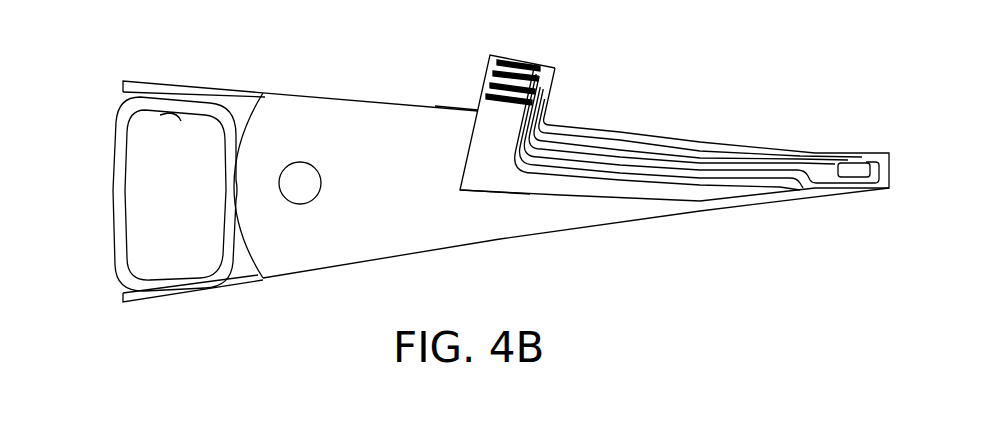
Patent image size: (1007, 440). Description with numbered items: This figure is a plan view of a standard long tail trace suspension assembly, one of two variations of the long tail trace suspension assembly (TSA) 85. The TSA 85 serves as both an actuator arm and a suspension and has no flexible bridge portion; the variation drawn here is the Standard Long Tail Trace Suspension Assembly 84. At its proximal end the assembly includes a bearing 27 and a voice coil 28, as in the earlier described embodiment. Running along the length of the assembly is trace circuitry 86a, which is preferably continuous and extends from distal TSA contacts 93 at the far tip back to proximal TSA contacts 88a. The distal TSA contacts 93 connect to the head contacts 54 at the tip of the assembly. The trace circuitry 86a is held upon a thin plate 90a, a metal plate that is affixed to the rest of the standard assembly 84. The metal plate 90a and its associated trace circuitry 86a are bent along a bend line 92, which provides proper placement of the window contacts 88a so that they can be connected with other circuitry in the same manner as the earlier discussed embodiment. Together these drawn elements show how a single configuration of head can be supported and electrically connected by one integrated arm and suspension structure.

The long tail trace suspension assembly 85 is at (288, 105).
The voice coil 28 is at (112, 207).
The bearing 27 is at (322, 183).
The thin plate 90a is at (468, 153).
The proximal TSA contacts 88a is at (526, 58).
The bend line 92 is at (592, 125).
The trace circuitry 86a is at (530, 160).
The Standard Long Tail Trace Suspension Assembly 84 is at (529, 237).
The head contacts 54 is at (858, 160).
The distal TSA contacts 93 is at (875, 173).